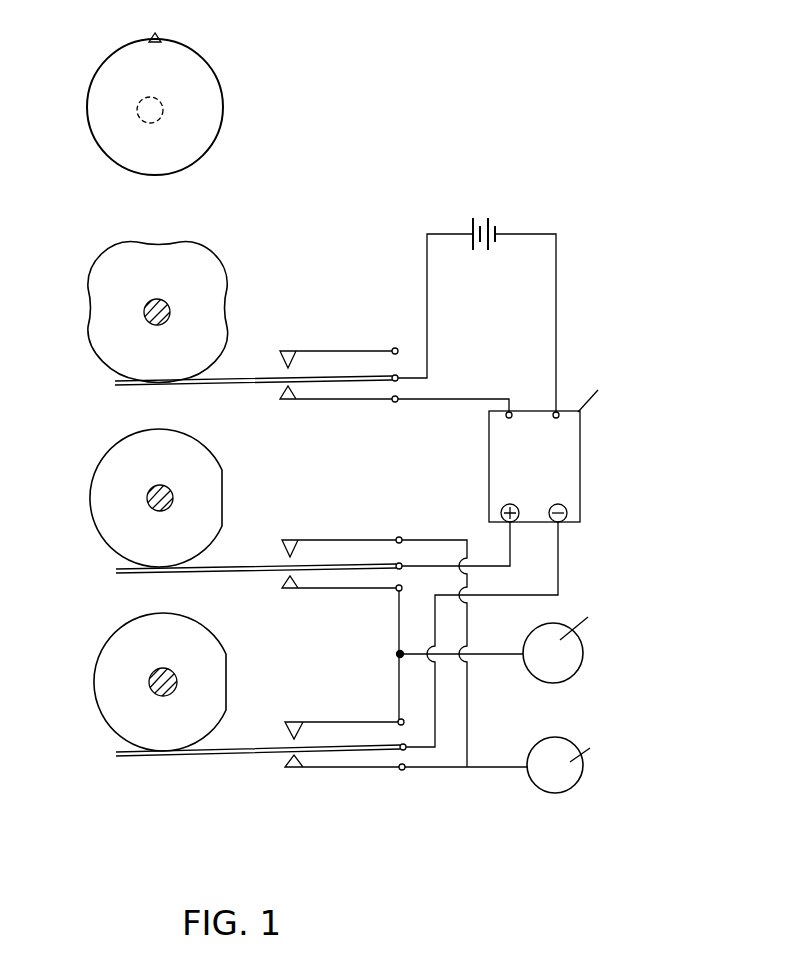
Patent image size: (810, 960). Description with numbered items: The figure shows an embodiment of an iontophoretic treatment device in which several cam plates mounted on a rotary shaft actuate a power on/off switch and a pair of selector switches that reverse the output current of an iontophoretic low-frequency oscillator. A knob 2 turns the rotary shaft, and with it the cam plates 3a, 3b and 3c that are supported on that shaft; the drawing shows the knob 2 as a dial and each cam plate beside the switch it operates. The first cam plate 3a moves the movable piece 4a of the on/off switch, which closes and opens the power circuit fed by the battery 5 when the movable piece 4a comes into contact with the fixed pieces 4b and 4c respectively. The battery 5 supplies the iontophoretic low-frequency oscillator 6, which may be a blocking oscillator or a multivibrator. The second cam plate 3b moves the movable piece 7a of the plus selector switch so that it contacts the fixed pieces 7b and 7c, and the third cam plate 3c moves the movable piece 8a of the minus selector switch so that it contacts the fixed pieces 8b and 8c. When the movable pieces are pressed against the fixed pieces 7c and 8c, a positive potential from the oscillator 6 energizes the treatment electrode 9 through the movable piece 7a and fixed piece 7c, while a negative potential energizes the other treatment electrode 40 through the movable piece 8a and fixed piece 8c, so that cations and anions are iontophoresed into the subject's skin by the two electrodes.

The knob 2 is at (103, 95).
The cam plate 3a is at (127, 285).
The cam plate 3b is at (118, 490).
The cam plate 3c is at (115, 663).
The movable piece 4a is at (133, 386).
The fixed piece 4b is at (358, 350).
The fixed piece 4c is at (369, 401).
The battery 5 is at (483, 222).
The iontophoretic low-frequency oscillator 6 is at (560, 445).
The movable piece 7a is at (128, 576).
The fixed piece 7b is at (365, 539).
The fixed piece 7c is at (402, 647).
The movable piece 8a is at (178, 757).
The fixed piece 8b is at (360, 720).
The fixed piece 8c is at (356, 769).
The treatment electrode 9 is at (560, 663).
The treatment electrode 40 is at (568, 777).